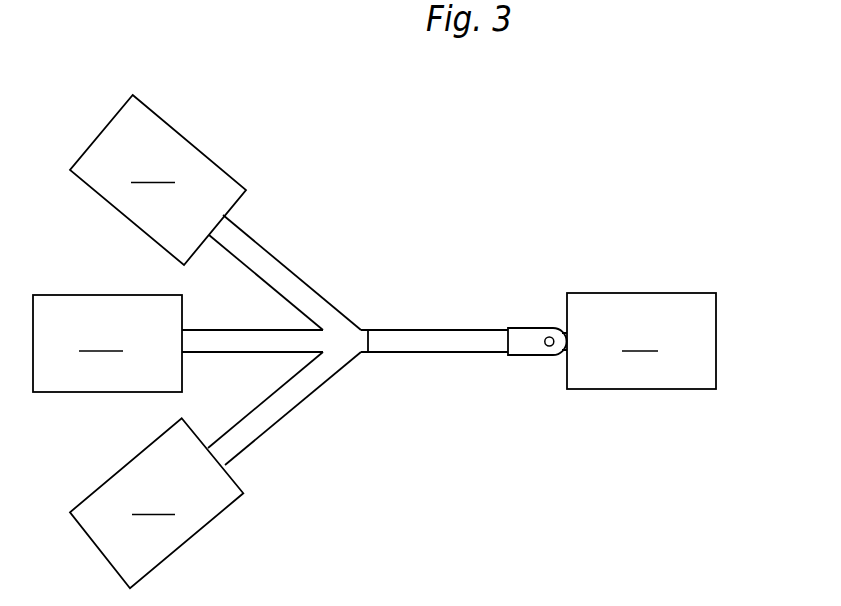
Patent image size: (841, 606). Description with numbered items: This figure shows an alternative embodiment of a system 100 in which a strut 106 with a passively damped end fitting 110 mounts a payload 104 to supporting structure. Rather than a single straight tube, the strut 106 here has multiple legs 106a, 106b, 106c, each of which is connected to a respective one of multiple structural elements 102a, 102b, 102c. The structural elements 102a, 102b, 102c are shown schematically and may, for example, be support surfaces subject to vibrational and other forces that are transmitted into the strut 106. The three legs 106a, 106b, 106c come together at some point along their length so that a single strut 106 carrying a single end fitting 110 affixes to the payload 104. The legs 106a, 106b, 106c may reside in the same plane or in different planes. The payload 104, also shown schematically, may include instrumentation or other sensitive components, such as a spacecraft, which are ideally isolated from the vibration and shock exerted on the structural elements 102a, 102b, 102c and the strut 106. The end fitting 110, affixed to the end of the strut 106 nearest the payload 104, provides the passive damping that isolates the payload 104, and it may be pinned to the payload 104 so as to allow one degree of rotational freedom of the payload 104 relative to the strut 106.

The system 100 is at (572, 186).
The structural element 102a is at (158, 180).
The structural element 102b is at (107, 343).
The structural element 102c is at (156, 503).
The payload 104 is at (641, 341).
The strut 106 is at (433, 330).
The leg 106a is at (270, 255).
The leg 106b is at (267, 328).
The leg 106c is at (287, 415).
The end fitting 110 is at (532, 355).